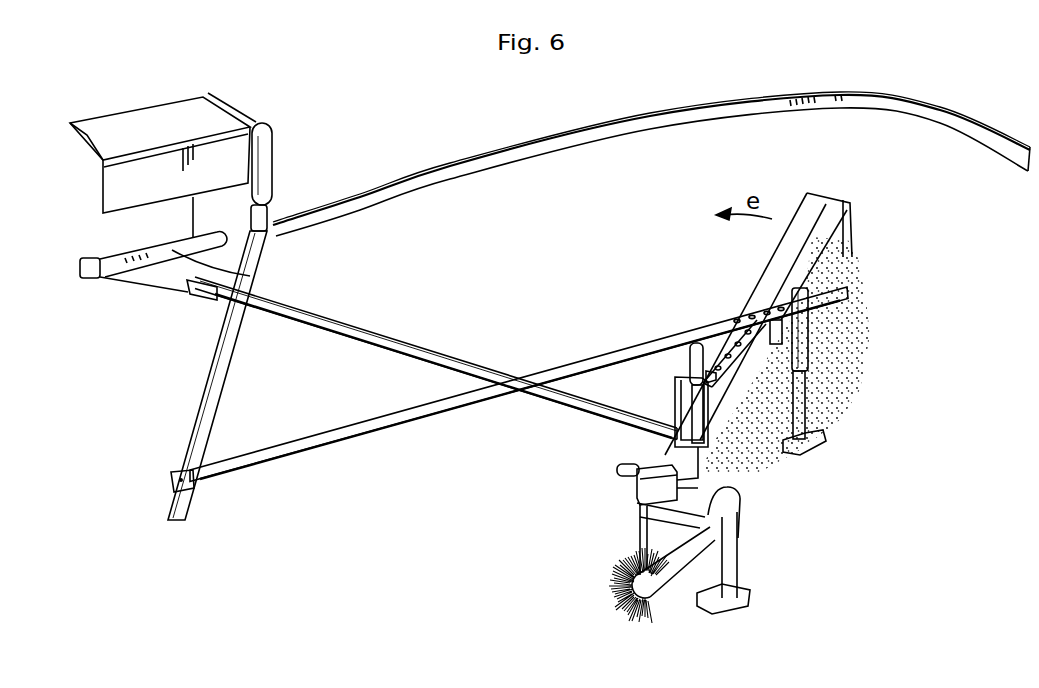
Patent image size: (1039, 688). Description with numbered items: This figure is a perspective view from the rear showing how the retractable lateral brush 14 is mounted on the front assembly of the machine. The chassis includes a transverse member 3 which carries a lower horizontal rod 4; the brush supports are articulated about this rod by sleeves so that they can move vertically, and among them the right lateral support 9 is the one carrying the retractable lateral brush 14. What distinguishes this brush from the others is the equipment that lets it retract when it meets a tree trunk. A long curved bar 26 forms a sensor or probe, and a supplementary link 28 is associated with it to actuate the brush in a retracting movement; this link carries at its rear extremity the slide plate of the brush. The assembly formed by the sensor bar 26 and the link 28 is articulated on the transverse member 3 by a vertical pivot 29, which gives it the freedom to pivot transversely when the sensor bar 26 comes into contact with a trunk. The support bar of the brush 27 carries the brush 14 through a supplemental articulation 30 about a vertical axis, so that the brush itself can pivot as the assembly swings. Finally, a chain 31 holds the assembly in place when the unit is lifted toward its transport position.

The transverse member 3 is at (165, 118).
The lower horizontal rod 4 is at (88, 282).
The right lateral support 9 is at (508, 375).
The retractable lateral brush 14 is at (830, 340).
The curved bar 26 is at (983, 113).
The support bar of the brush 27 is at (345, 347).
The supplementary link 28 is at (550, 366).
The vertical pivot 29 is at (277, 183).
The supplemental articulation 30 is at (677, 393).
The chain 31 is at (717, 366).